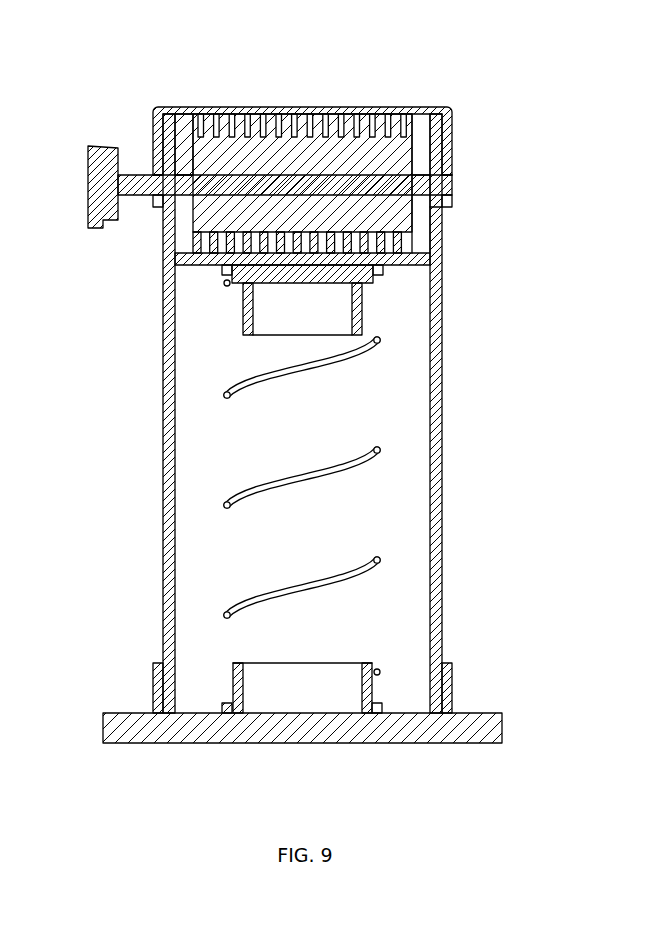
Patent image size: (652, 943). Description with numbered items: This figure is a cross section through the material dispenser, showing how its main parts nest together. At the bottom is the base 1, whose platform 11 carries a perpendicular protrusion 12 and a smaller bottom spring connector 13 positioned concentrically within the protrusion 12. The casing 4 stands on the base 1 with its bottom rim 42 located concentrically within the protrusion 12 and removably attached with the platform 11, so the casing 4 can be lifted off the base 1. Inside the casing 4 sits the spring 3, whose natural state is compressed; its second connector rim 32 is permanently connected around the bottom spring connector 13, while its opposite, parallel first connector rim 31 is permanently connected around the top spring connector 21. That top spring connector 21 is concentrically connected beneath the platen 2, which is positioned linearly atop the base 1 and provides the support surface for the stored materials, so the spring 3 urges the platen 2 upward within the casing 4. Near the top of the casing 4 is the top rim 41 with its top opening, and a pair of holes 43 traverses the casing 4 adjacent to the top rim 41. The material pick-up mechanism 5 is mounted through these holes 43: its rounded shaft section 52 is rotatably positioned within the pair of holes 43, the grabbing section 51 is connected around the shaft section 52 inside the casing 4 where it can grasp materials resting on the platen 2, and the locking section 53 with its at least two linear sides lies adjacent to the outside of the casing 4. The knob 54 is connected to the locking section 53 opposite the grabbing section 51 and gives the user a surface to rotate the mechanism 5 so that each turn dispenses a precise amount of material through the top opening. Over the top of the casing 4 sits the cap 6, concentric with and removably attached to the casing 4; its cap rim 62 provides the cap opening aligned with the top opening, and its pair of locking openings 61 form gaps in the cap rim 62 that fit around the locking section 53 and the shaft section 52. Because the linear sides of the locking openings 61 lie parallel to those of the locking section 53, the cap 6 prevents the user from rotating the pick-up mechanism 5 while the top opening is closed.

The base 1 is at (486, 693).
The platen 2 is at (428, 262).
The spring 3 is at (266, 488).
The casing 4 is at (442, 455).
The material pick-up mechanism 5 is at (282, 197).
The cap 6 is at (302, 145).
The platform 11 is at (143, 732).
The protrusion 12 is at (157, 678).
The bottom spring connector 13 is at (370, 665).
The top spring connector 21 is at (252, 320).
The first connector rim 31 is at (383, 273).
The second connector rim 32 is at (228, 707).
The top rim 41 is at (443, 107).
The bottom rim 42 is at (437, 708).
The pair of holes 43 is at (452, 173).
The grabbing section 51 is at (300, 117).
The shaft section 52 is at (182, 178).
The locking section 53 is at (128, 175).
The knob 54 is at (92, 147).
The pair of locking openings 61 is at (155, 198).
The cap rim 62 is at (442, 207).